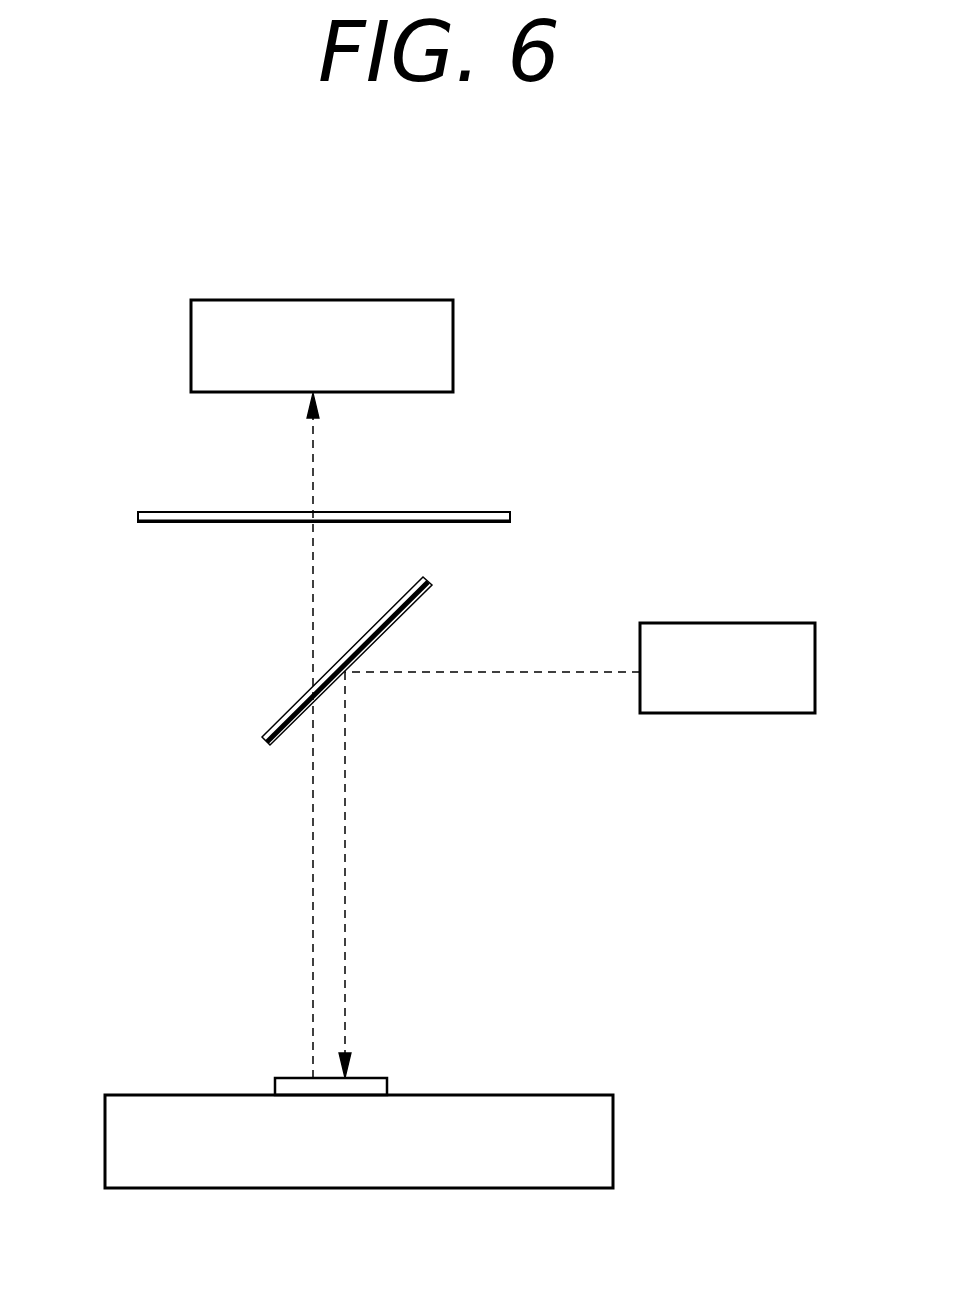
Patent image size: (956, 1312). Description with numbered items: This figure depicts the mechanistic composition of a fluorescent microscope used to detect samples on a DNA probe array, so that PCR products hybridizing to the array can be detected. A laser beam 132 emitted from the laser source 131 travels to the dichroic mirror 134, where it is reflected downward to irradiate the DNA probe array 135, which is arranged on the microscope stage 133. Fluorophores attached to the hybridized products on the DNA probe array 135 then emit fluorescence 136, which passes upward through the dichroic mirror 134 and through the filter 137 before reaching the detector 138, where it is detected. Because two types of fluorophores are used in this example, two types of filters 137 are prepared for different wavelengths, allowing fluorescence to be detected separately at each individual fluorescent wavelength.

The laser source 131 is at (698, 635).
The laser beam 132 is at (428, 673).
The microscope stage 133 is at (542, 1115).
The dichroic mirror 134 is at (282, 717).
The DNA probe array 135 is at (375, 1080).
The fluorescence 136 is at (313, 852).
The filter 137 is at (193, 517).
The detector 138 is at (418, 318).